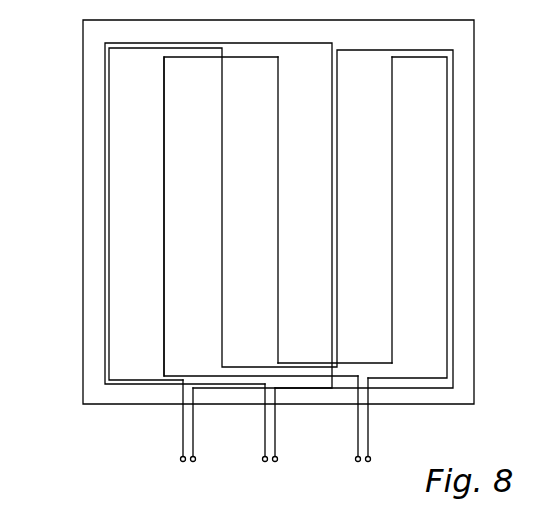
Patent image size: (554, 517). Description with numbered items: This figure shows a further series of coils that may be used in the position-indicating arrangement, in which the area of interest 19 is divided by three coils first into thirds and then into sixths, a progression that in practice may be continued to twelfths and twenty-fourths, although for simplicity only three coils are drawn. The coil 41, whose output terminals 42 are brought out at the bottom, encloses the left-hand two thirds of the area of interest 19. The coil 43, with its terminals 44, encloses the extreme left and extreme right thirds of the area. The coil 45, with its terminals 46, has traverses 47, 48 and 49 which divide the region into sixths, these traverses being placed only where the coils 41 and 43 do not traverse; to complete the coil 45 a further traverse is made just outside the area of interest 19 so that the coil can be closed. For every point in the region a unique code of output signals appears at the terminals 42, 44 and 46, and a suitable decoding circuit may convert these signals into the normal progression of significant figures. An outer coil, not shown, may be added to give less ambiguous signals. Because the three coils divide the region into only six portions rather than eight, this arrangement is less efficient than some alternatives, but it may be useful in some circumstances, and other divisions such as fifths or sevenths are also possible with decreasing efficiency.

The area of interest 19 is at (474, 231).
The coil 41 is at (105, 178).
The output terminals 42 is at (189, 464).
The coil 43 is at (109, 213).
The terminals 44 is at (271, 464).
The coil 45 is at (168, 379).
The terminals 46 is at (363, 464).
The traverse 47 is at (163, 148).
The traverse 48 is at (277, 248).
The traverse 49 is at (393, 262).